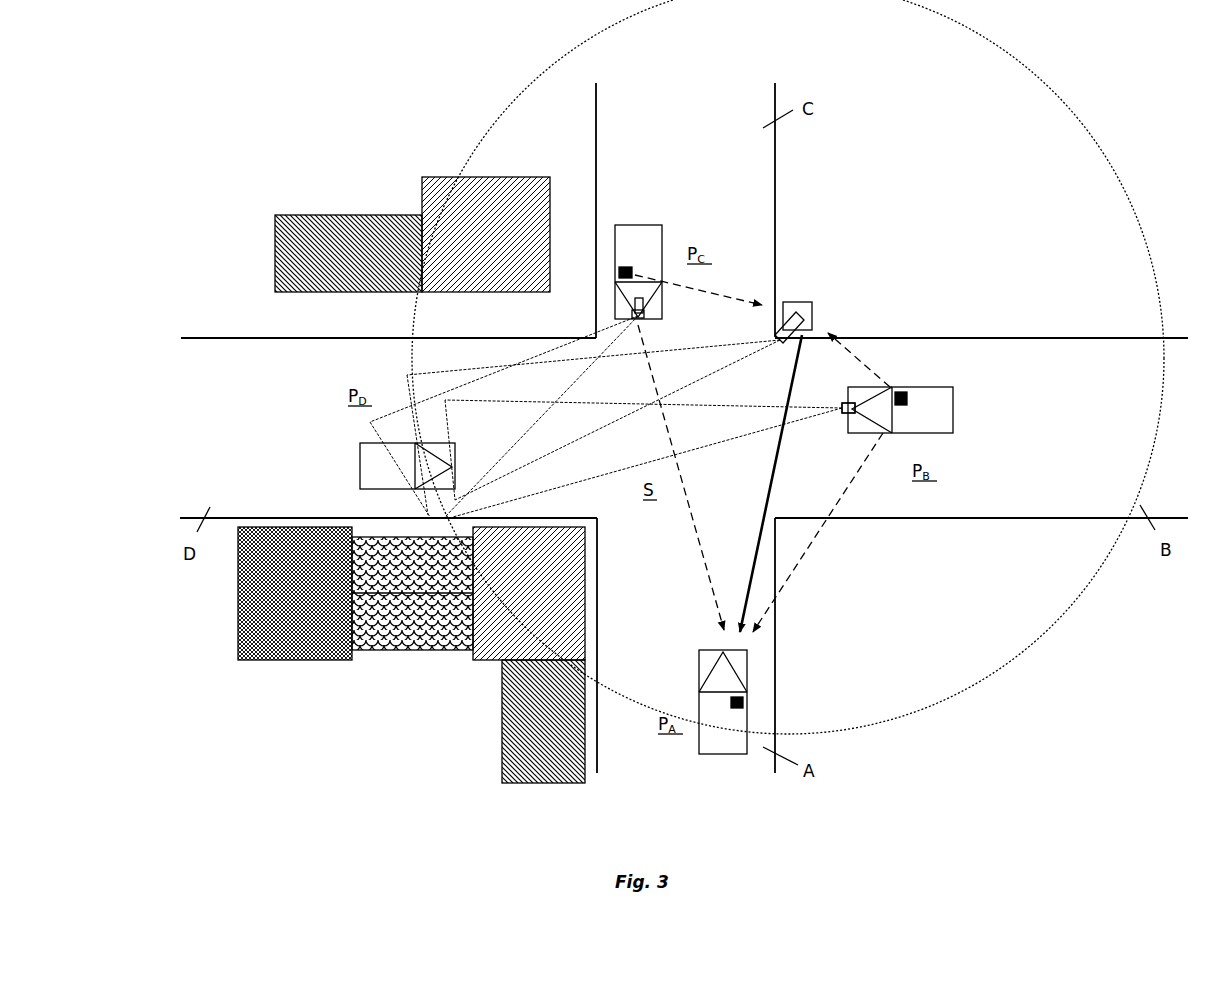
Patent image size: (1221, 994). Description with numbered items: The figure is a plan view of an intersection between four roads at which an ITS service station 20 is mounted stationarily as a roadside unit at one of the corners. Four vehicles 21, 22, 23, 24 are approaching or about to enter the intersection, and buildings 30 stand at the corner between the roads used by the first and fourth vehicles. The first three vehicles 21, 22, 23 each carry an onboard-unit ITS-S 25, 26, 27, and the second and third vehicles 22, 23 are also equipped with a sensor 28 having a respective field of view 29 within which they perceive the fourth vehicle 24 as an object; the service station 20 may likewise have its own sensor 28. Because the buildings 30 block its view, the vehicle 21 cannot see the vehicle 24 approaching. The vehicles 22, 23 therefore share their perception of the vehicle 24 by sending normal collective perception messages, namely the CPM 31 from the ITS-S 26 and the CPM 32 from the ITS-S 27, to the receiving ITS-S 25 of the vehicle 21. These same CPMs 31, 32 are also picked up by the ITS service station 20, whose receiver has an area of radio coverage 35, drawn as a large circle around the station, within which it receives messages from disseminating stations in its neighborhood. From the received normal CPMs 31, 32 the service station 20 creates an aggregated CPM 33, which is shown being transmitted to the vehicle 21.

The ITS service station 20 is at (805, 310).
The vehicle 21 is at (720, 745).
The vehicle 22 is at (940, 412).
The vehicle 23 is at (647, 240).
The vehicle 24 is at (372, 462).
The ITS-S 25 is at (745, 700).
The ITS-S 26 is at (905, 393).
The ITS-S 27 is at (619, 268).
The sensor 28 is at (647, 313).
The field of view 29 is at (548, 350).
The buildings 30 is at (428, 195).
The CPM 31 is at (862, 360).
The CPM 32 is at (715, 293).
The aggregated CPM 33 is at (772, 486).
The area of radio coverage 35 is at (1120, 183).